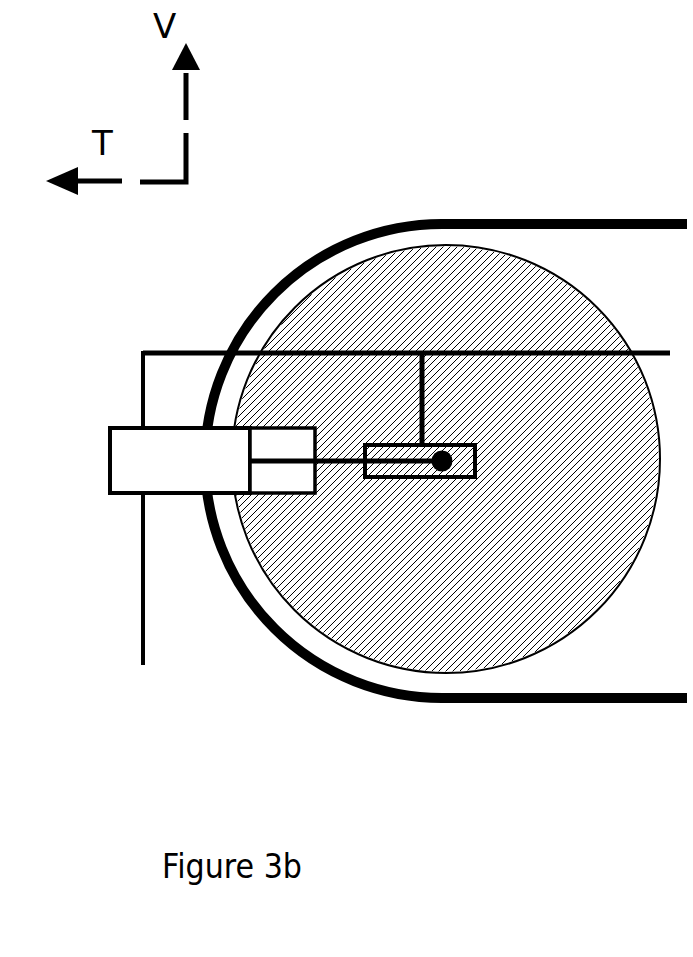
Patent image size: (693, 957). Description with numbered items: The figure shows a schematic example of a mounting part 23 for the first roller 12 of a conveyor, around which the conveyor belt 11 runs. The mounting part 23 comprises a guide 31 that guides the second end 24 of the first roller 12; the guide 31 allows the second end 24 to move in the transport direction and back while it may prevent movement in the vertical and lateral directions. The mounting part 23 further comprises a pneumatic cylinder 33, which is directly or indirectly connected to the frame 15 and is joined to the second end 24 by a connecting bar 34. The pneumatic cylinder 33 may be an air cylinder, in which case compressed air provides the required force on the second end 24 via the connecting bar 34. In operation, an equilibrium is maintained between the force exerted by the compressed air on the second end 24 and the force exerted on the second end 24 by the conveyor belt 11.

The conveyor belt 11 is at (292, 273).
The first roller 12 is at (467, 632).
The frame 15 is at (659, 353).
The mounting part 23 is at (499, 490).
The second end 24 is at (443, 472).
The guide 31 is at (383, 477).
The pneumatic cylinder 33 is at (200, 428).
The connecting bar 34 is at (340, 452).